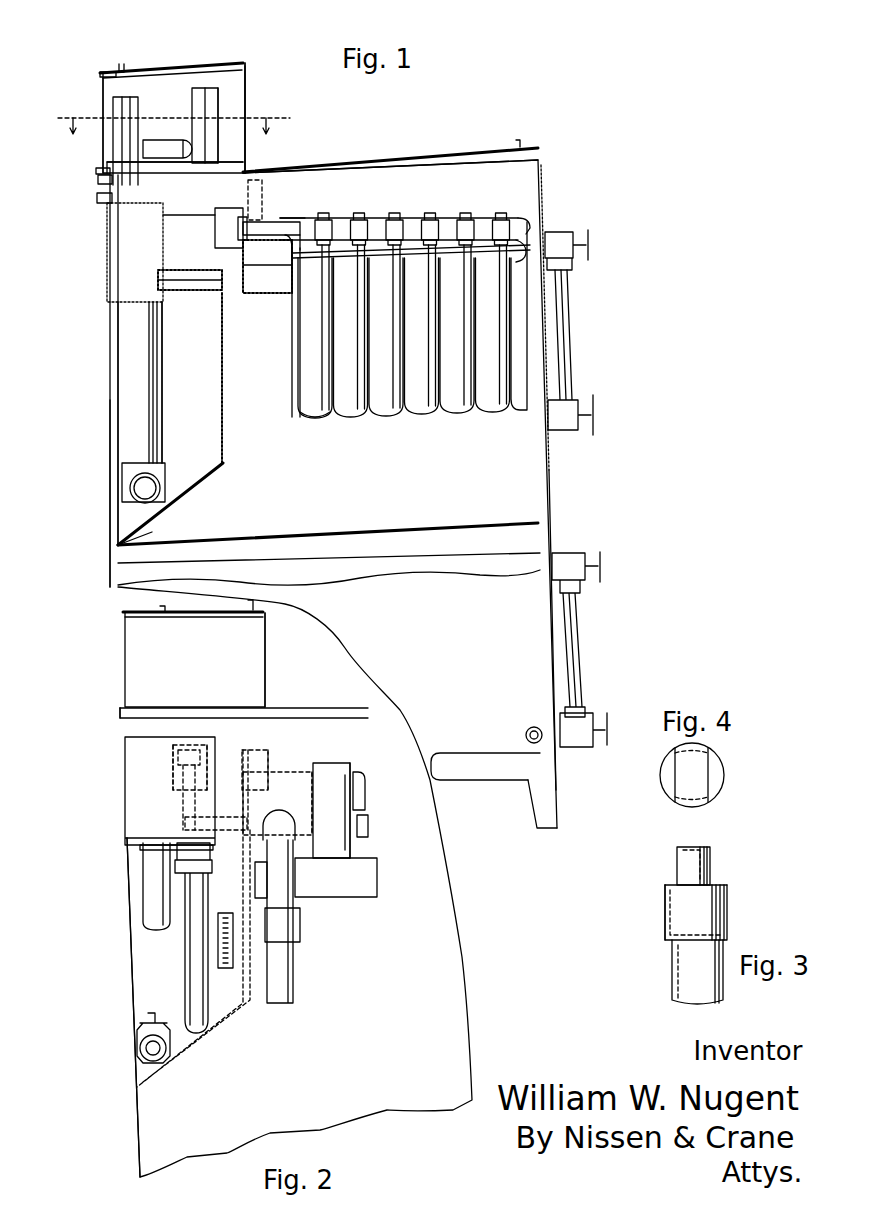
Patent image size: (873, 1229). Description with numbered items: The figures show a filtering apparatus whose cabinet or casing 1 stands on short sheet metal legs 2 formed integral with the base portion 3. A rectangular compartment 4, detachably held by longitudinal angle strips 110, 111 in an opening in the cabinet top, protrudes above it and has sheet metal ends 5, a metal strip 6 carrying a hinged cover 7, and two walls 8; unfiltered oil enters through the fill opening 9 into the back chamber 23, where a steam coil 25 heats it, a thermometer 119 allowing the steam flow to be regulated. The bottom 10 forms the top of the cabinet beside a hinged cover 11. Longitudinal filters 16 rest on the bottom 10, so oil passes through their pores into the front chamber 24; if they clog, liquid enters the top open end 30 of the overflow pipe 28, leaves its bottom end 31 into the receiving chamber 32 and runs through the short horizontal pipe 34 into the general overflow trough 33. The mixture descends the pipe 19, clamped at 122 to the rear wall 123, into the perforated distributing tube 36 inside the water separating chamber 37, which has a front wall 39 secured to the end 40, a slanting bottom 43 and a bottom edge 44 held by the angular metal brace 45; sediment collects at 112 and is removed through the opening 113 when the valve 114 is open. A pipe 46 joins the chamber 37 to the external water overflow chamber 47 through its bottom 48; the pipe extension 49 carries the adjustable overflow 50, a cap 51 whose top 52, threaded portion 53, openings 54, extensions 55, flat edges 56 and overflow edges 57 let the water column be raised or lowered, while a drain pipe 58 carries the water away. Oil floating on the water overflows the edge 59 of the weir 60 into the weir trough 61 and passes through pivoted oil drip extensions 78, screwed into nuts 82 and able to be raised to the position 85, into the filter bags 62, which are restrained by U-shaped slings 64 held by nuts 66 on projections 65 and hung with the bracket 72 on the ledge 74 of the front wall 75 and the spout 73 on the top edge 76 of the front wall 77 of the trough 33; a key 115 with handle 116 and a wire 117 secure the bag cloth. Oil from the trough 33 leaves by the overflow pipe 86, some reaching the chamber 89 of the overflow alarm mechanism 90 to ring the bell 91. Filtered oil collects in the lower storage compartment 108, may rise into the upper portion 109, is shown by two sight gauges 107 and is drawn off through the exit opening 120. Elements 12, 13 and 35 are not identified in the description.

In FIG. 1, the cabinet or casing 1 is at (517, 191).
In FIG. 1, the legs 2 is at (558, 809).
In FIG. 1, the base portion 3 is at (505, 772).
In FIG. 1, the rectangular compartment 4 is at (103, 113).
In FIG. 2, the rectangular compartment 4 is at (125, 652).
In FIG. 2, the sheet metal ends 5 is at (258, 662).
In FIG. 1, the metal strip 6 is at (150, 68).
In FIG. 2, the metal strip 6 is at (162, 608).
In FIG. 1, the cover 7 is at (190, 66).
In FIG. 2, the cover 7 is at (203, 610).
In FIG. 1, the sheet metal walls 8 is at (245, 88).
In FIG. 1, the fill opening 9 is at (124, 66).
In FIG. 1, the bottom 10 is at (205, 172).
In FIG. 1, the cover 11 is at (478, 152).
In FIG. 1, the plate 12 is at (228, 160).
In FIG. 1, the housing wall 13 is at (245, 103).
In FIG. 1, the longitudinal filters 16 is at (192, 100).
In FIG. 1, the vertically extending pipe 19 is at (160, 374).
In FIG. 1, the back chamber 23 is at (133, 90).
In FIG. 1, the front chamber 24 is at (232, 136).
In FIG. 1, the steam coil 25 is at (161, 142).
In FIG. 1, the overflow pipe 28 is at (122, 125).
In FIG. 1, the top open end 30 is at (133, 100).
In FIG. 1, the bottom end 31 is at (100, 182).
In FIG. 1, the receiving chamber 32 is at (150, 246).
In FIG. 1, the general overflow trough 33 is at (268, 295).
In FIG. 2, the general overflow trough 33 is at (275, 776).
In FIG. 1, the short horizontal pipe 34 is at (200, 292).
In FIG. 2, the short horizontal pipe 34 is at (232, 831).
In FIG. 2, the plate 35 is at (350, 856).
In FIG. 1, the horizontally extending distributing tube 36 is at (126, 490).
In FIG. 1, the water separating chamber 37 is at (195, 447).
In FIG. 2, the water separating chamber 37 is at (145, 985).
In FIG. 1, the front wall 39 is at (224, 373).
In FIG. 2, the front wall 39 is at (256, 1002).
In FIG. 2, the end 40 is at (130, 728).
In FIG. 1, the slanting bottom 43 is at (208, 490).
In FIG. 1, the bottom edge 44 is at (118, 556).
In FIG. 1, the angular metal brace 45 is at (138, 544).
In FIG. 2, the pipe 46 is at (190, 940).
In FIG. 2, the water overflow chamber 47 is at (145, 820).
In FIG. 2, the bottom 48 is at (130, 847).
In FIG. 2, the pipe extension 49 is at (182, 800).
In FIG. 3, the pipe extension 49 is at (672, 965).
In FIG. 2, the adjustable overflow attachment 50 is at (175, 786).
In FIG. 3, the adjustable overflow attachment 50 is at (665, 895).
In FIG. 3, the cap 51 is at (683, 906).
In FIG. 2, the top 52 is at (192, 758).
In FIG. 4, the top 52 is at (705, 785).
In FIG. 3, the top 52 is at (712, 847).
In FIG. 3, the threaded portion 53 is at (727, 918).
In FIG. 4, the openings 54 is at (712, 768).
In FIG. 3, the extensions 55 is at (710, 861).
In FIG. 3, the flat edges 56 is at (677, 864).
In FIG. 2, the overflow edges 57 is at (175, 760).
In FIG. 3, the overflow edges 57 is at (727, 888).
In FIG. 2, the drain pipe 58 is at (150, 900).
In FIG. 1, the weir edge 59 is at (189, 240).
In FIG. 2, the weir edge 59 is at (251, 752).
In FIG. 1, the weir 60 is at (225, 210).
In FIG. 2, the weir 60 is at (232, 788).
In FIG. 1, the weir trough 61 is at (243, 242).
In FIG. 2, the weir trough 61 is at (262, 760).
In FIG. 1, the filter bags 62 is at (515, 308).
In FIG. 1, the U-shaped slings 64 is at (360, 402).
In FIG. 1, the projection 65 is at (370, 225).
In FIG. 1, the nuts 66 is at (348, 246).
In FIG. 1, the bracket 72 is at (531, 221).
In FIG. 1, the spout 73 is at (295, 222).
In FIG. 1, the shelf or ledge 74 is at (552, 236).
In FIG. 1, the front wall 75 is at (540, 201).
In FIG. 1, the top edge 76 is at (288, 240).
In FIG. 1, the front wall 77 is at (290, 290).
In FIG. 2, the front wall 77 is at (308, 802).
In FIG. 1, the pivoted oil drip extension 78 is at (265, 222).
In FIG. 1, the nut 82 is at (250, 268).
In FIG. 1, the raised position of oil drip extension 85 is at (262, 210).
In FIG. 2, the overflow pipe 86 is at (300, 940).
In FIG. 2, the chamber 89 is at (377, 876).
In FIG. 2, the overflow alarm mechanism 90 is at (328, 765).
In FIG. 2, the electric bell mechanism 91 is at (368, 825).
In FIG. 1, the sight gauges 107 is at (582, 630).
In FIG. 1, the lower storage compartment 108 is at (530, 678).
In FIG. 1, the upper portion 109 is at (525, 482).
In FIG. 1, the angle strip 110 is at (100, 170).
In FIG. 2, the angle strip 110 is at (125, 714).
In FIG. 1, the angle strip 111 is at (250, 172).
In FIG. 2, the angle strip 111 is at (272, 714).
In FIG. 1, the bottom of separating chamber 112 is at (118, 525).
In FIG. 2, the opening 113 is at (142, 1056).
In FIG. 2, the valve 114 is at (137, 1040).
In FIG. 1, the key 115 is at (417, 258).
In FIG. 1, the handle 116 is at (518, 258).
In FIG. 1, the wire or string 117 is at (300, 275).
In FIG. 2, the thermometer 119 is at (228, 970).
In FIG. 1, the exit opening 120 is at (534, 744).
In FIG. 1, the clamp 122 is at (97, 200).
In FIG. 1, the rear wall 123 is at (107, 250).